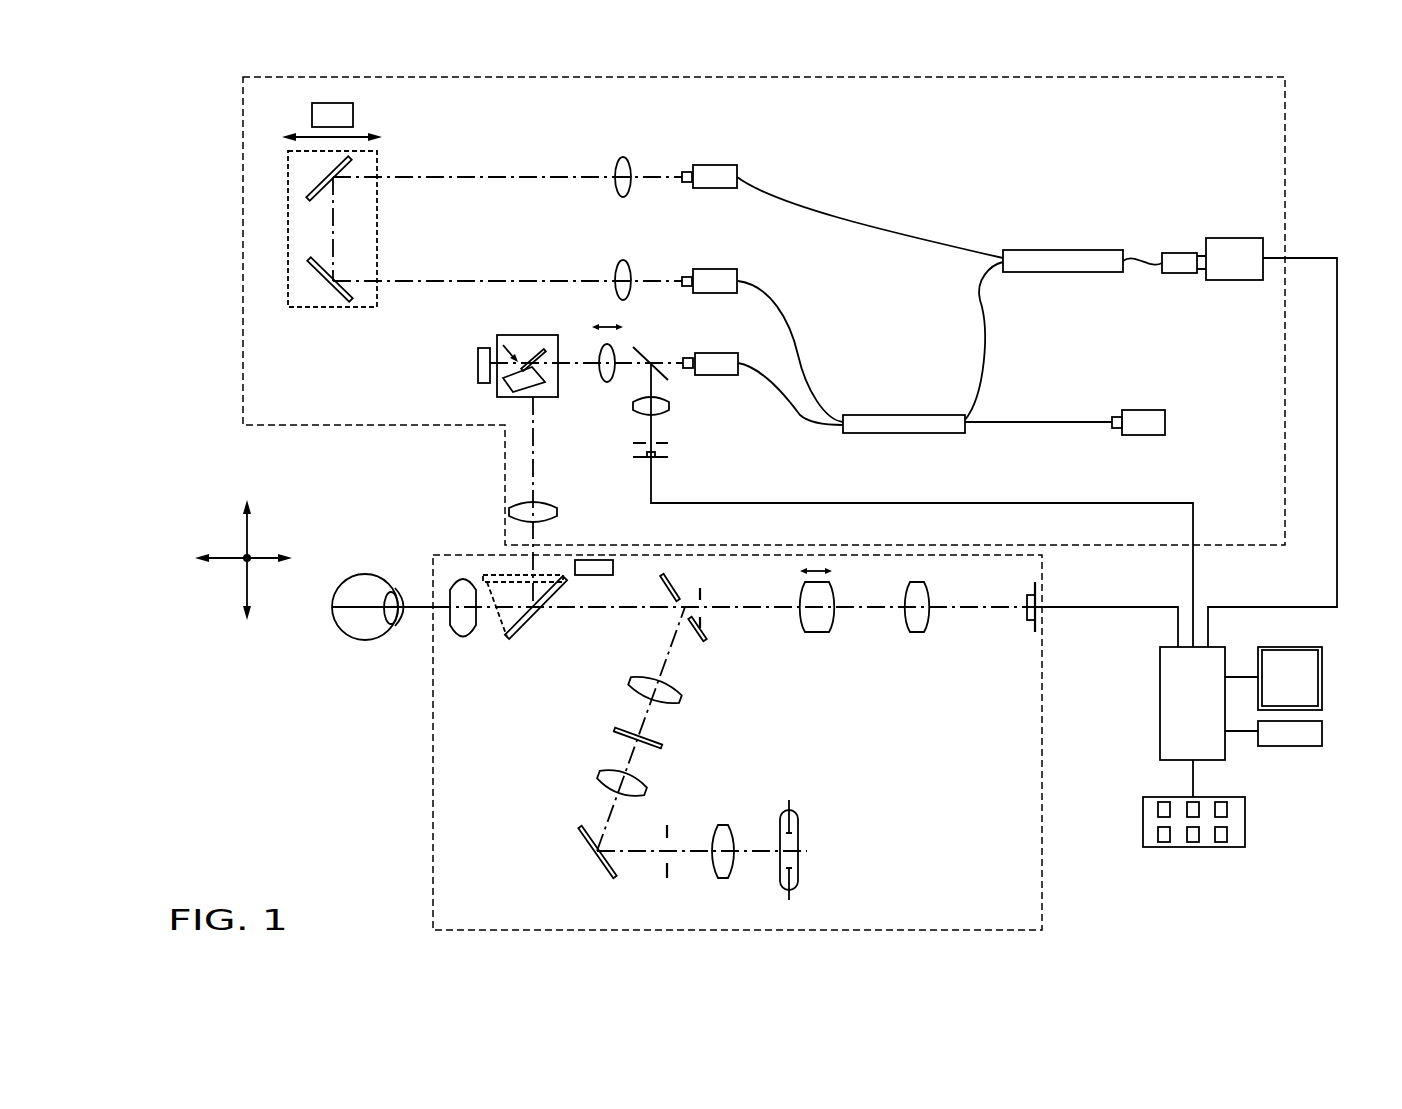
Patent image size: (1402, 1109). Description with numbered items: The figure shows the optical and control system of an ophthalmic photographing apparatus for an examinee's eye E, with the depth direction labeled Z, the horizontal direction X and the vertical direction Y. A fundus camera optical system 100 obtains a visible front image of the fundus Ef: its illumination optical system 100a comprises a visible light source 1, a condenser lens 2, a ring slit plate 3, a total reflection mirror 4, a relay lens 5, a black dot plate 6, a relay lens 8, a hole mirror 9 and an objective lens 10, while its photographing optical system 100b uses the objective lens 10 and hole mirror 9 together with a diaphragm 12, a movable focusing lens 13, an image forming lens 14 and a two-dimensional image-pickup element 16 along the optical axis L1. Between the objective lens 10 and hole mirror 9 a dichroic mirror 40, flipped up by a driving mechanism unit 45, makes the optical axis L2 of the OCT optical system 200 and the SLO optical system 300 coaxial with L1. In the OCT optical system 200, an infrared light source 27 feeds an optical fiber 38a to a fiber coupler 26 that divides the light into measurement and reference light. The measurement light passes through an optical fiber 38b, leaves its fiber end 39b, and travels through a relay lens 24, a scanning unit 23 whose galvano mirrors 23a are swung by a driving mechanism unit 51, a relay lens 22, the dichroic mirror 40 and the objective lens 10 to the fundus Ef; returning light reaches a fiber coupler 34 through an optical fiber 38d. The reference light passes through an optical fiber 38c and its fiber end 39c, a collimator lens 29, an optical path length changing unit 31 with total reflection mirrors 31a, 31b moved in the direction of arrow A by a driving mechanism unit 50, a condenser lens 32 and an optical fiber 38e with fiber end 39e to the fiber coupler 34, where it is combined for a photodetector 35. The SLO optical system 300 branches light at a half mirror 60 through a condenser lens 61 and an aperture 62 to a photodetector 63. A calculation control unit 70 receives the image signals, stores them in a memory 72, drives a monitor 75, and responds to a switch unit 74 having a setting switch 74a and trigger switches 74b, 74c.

The visible light source 1 is at (788, 808).
The condenser lens 2 is at (715, 865).
The ring slit plate 3 is at (667, 868).
The total reflection mirror 4 is at (586, 850).
The relay lens 5 is at (600, 780).
The black dot plate 6 is at (615, 730).
The relay lens 8 is at (672, 700).
The hole mirror 9 is at (695, 635).
The objective lens 10 is at (462, 578).
The diaphragm 12 is at (705, 620).
The focusing lens 13 is at (828, 630).
The image forming lens 14 is at (918, 625).
The two-dimensional image-pickup element 16 is at (1037, 600).
The relay lens 22 is at (557, 512).
The scanning unit 23 is at (548, 335).
The galvano mirrors 23a is at (503, 345).
The relay lens 24 is at (604, 382).
The fiber coupler 26 is at (878, 433).
The infrared light source 27 is at (1142, 410).
The collimator lens 29 is at (618, 262).
The optical path length changing unit 31 is at (362, 307).
The total reflection mirror 31a is at (315, 270).
The total reflection mirror 31b is at (318, 187).
The condenser lens 32 is at (618, 158).
The fiber coupler 34 is at (1033, 250).
The photodetector 35 is at (1205, 245).
The optical fiber 38a is at (1013, 425).
The optical fiber 38b is at (778, 388).
The optical fiber 38c is at (787, 320).
The optical fiber 38d is at (985, 340).
The optical fiber 38e is at (797, 208).
The fiber end 39b is at (683, 362).
The fiber end 39c is at (682, 280).
The fiber end 39e is at (682, 175).
The dichroic mirror 40 is at (534, 618).
The driving mechanism unit 45 is at (605, 560).
The driving mechanism unit 50 is at (325, 103).
The driving mechanism unit 51 is at (478, 362).
The half mirror 60 is at (645, 355).
The condenser lens 61 is at (670, 400).
The aperture 62 is at (668, 443).
The photodetector 63 is at (655, 457).
The calculation control unit 70 is at (1160, 715).
The memory 72 is at (1322, 733).
The switch unit 74 is at (1245, 820).
The setting switch 74a is at (1160, 805).
The trigger switch 74b is at (1190, 812).
The trigger switch 74c is at (1222, 810).
The monitor 75 is at (1322, 668).
The fundus camera optical system 100 is at (433, 845).
The illumination optical system 100a is at (560, 810).
The photographing optical system 100b is at (750, 692).
The optical coherence tomography optical system 200 is at (243, 270).
The scanning laser ophthalmoscope optical system 300 is at (750, 478).
The arrow direction A is at (366, 133).
The examinee's eye E is at (367, 650).
The fundus Ef is at (340, 628).
The optical axis L1 is at (603, 612).
The optical axis L2 is at (535, 456).
The X-direction X is at (249, 556).
The Y-direction Y is at (248, 476).
The Z-direction Z is at (185, 560).